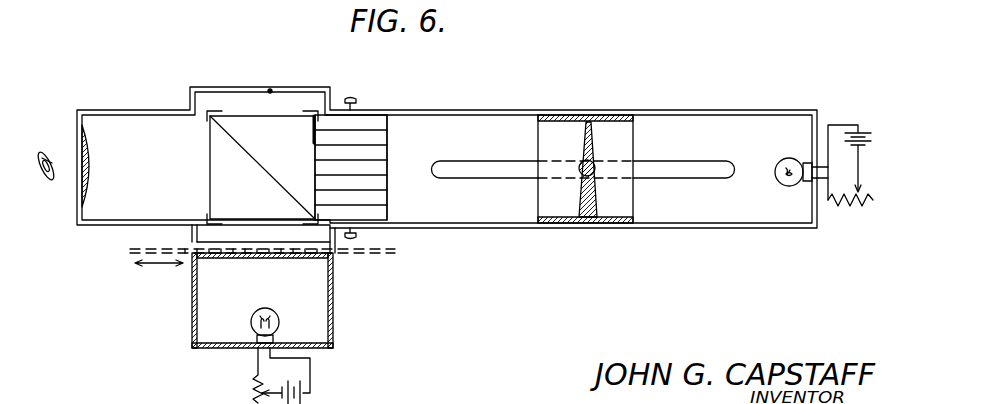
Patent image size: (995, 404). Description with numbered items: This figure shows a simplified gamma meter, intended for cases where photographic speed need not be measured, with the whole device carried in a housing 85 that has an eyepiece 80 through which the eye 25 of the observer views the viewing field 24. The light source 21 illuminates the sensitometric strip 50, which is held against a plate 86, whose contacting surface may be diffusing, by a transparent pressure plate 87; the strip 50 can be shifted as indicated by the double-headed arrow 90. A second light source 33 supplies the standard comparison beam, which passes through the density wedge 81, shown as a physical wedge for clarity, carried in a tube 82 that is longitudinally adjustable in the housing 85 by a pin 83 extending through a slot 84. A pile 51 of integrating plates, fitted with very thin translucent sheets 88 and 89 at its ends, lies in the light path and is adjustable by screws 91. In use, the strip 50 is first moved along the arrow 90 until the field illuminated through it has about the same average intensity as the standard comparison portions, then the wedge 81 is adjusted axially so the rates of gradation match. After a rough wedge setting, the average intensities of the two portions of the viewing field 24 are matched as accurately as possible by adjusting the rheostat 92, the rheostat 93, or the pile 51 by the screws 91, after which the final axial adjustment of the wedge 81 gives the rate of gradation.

The light source 21 is at (273, 314).
The viewing field 24 is at (270, 183).
The eye 25 is at (50, 153).
The light source 33 is at (784, 160).
The sensitometric strip 50 is at (390, 254).
The pile of integrating plates 51 is at (362, 133).
The eyepiece 80 is at (93, 148).
The density wedge 81 is at (592, 146).
The tube 82 is at (547, 120).
The pin 83 is at (594, 172).
The slot 84 is at (471, 170).
The housing 85 is at (498, 228).
The plate 86 is at (214, 246).
The transparent pressure plate 87 is at (256, 262).
The translucent sheet 88 is at (312, 142).
The translucent sheet 89 is at (390, 140).
The double-headed arrow 90 is at (160, 264).
The screws 91 is at (352, 97).
The rheostat 92 is at (253, 393).
The rheostat 93 is at (852, 206).